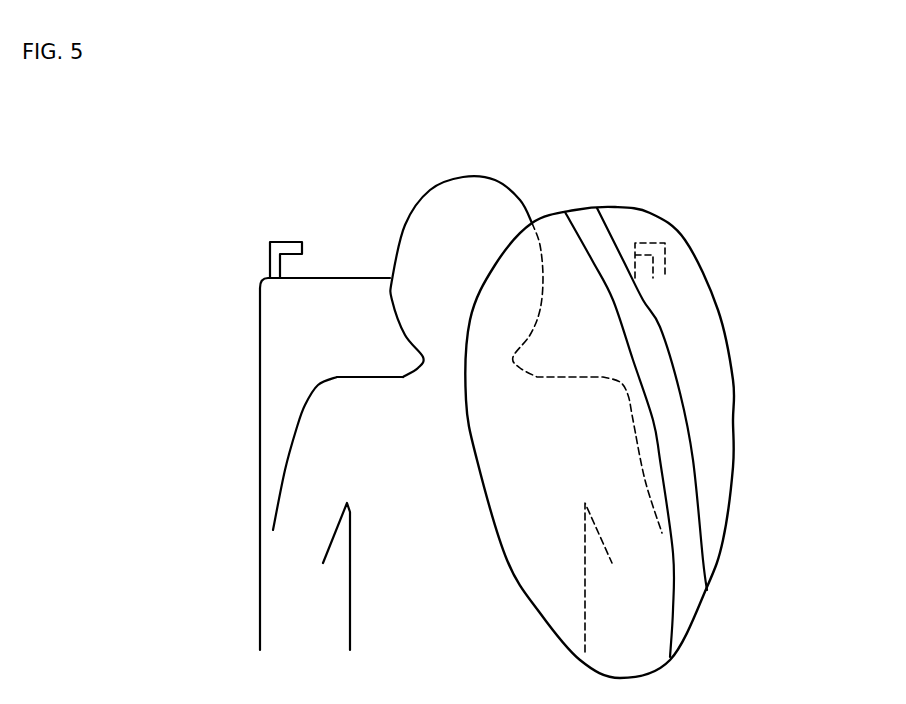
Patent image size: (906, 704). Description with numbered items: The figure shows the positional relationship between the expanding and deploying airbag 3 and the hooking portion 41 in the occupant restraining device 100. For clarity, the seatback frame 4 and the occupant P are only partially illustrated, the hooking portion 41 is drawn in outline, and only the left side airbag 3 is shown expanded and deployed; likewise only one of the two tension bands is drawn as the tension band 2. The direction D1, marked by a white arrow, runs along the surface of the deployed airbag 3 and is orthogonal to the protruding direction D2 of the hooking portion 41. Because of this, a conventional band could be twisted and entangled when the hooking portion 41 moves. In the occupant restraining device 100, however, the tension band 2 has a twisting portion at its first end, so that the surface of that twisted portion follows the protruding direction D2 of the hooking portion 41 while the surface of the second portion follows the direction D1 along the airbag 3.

The occupant restraining device 100 is at (632, 378).
The tension band 2 is at (687, 493).
The airbag 3 is at (717, 377).
The seatback frame 4 is at (274, 310).
The hooking portion 41 is at (287, 242).
The occupant P is at (438, 172).
The direction along the airbag surface D1 is at (541, 190).
The protruding direction of the hooking portion D2 is at (682, 242).